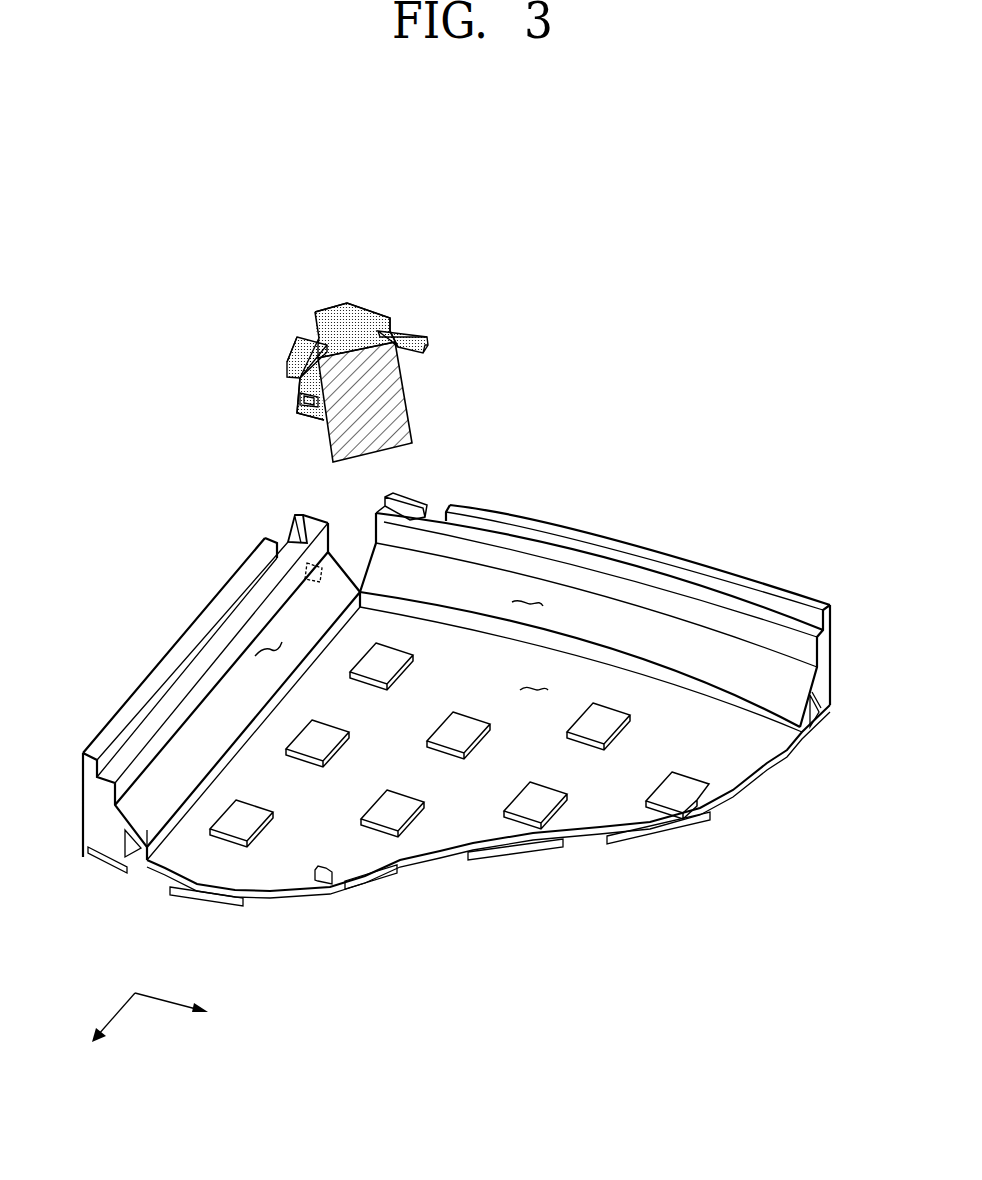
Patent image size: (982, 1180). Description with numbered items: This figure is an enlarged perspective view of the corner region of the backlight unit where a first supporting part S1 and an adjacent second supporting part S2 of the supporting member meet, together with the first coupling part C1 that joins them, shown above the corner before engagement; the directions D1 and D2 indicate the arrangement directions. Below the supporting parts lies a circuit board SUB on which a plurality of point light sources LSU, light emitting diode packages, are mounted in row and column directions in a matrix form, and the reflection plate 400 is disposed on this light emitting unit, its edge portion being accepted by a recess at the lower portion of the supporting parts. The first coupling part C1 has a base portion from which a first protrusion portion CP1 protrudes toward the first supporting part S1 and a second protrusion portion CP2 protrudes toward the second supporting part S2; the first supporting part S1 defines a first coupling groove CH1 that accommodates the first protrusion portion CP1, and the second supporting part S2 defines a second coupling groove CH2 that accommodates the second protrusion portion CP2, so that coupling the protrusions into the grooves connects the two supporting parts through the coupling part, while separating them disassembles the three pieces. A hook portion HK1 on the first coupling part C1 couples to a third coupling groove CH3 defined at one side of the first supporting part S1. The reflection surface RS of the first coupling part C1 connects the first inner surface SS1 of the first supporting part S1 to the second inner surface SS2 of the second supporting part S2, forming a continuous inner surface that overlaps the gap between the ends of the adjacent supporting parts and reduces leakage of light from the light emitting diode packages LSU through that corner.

The first coupling part C1 is at (342, 318).
The first protrusion portion CP1 is at (293, 358).
The second protrusion portion CP2 is at (410, 337).
The hook portion HK1 is at (297, 397).
The reflection surface RS is at (397, 393).
The first coupling groove CH1 is at (297, 533).
The second coupling groove CH2 is at (413, 512).
The third coupling groove CH3 is at (307, 568).
The first supporting part S1 is at (171, 650).
The second supporting part S2 is at (745, 578).
The first inner surface SS1 is at (268, 650).
The second inner surface SS2 is at (528, 597).
The point light source LSU is at (382, 656).
The reflection plate 400 is at (535, 685).
The circuit board SUB is at (190, 893).
The first direction D1 is at (106, 1032).
The second direction D2 is at (187, 1011).